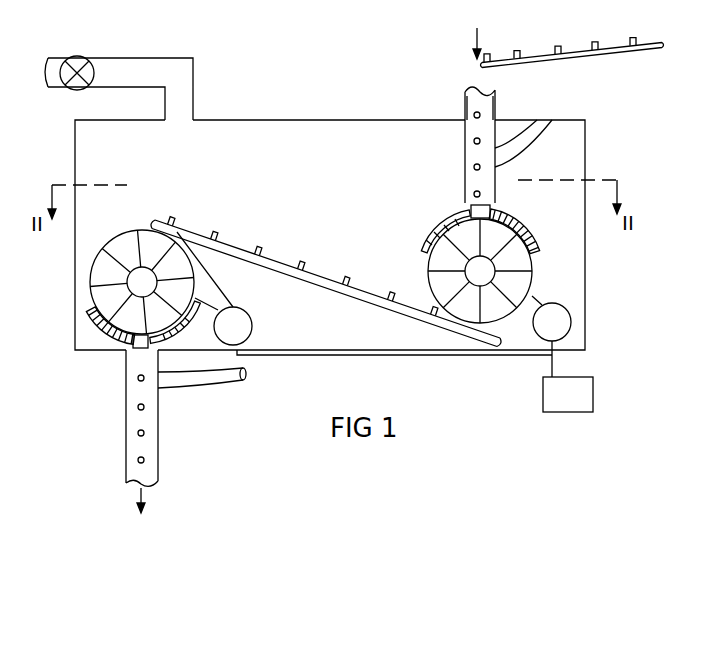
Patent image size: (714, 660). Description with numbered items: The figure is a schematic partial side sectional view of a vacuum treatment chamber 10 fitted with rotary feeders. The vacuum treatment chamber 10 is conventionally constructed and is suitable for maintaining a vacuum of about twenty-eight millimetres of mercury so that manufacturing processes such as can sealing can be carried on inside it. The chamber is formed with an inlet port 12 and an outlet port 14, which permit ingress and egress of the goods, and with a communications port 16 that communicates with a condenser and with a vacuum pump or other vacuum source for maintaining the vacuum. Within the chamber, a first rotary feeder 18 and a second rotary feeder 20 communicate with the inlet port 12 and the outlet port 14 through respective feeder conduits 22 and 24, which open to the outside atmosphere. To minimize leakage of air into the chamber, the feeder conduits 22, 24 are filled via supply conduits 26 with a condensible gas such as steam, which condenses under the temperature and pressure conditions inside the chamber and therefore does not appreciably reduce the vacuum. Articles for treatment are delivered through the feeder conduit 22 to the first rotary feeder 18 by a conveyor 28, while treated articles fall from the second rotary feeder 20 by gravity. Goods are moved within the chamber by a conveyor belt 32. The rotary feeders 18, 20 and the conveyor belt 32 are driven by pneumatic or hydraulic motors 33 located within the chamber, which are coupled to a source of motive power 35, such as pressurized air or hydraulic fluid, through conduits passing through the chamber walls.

The vacuum treatment chamber 10 is at (305, 113).
The inlet port 12 is at (484, 117).
The outlet port 14 is at (141, 358).
The communications port 16 is at (177, 113).
The first rotary feeder 18 is at (542, 270).
The second rotary feeder 20 is at (100, 238).
The feeder conduit 22 is at (465, 107).
The feeder conduit 24 is at (126, 466).
The supply conduit 26 is at (550, 128).
The conveyor 28 is at (608, 50).
The conveyor belt 32 is at (312, 278).
The motor 33 is at (374, 304).
The source of motive power 35 is at (568, 394).